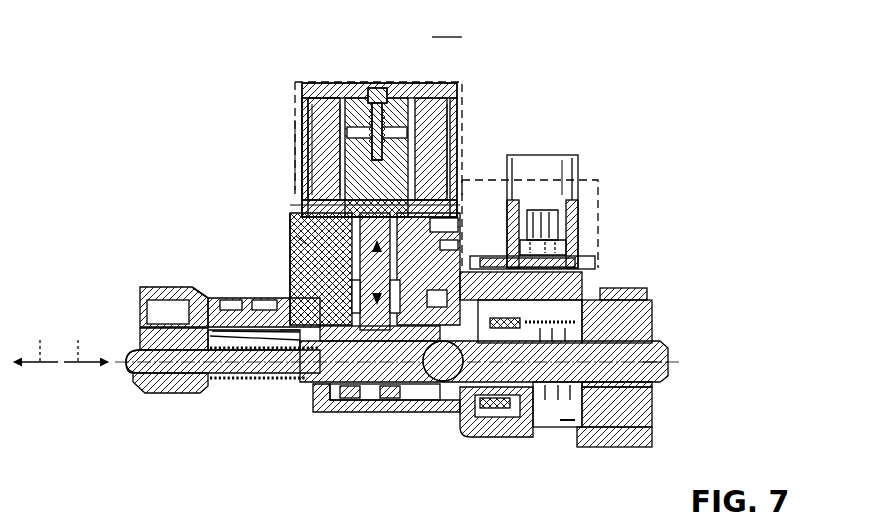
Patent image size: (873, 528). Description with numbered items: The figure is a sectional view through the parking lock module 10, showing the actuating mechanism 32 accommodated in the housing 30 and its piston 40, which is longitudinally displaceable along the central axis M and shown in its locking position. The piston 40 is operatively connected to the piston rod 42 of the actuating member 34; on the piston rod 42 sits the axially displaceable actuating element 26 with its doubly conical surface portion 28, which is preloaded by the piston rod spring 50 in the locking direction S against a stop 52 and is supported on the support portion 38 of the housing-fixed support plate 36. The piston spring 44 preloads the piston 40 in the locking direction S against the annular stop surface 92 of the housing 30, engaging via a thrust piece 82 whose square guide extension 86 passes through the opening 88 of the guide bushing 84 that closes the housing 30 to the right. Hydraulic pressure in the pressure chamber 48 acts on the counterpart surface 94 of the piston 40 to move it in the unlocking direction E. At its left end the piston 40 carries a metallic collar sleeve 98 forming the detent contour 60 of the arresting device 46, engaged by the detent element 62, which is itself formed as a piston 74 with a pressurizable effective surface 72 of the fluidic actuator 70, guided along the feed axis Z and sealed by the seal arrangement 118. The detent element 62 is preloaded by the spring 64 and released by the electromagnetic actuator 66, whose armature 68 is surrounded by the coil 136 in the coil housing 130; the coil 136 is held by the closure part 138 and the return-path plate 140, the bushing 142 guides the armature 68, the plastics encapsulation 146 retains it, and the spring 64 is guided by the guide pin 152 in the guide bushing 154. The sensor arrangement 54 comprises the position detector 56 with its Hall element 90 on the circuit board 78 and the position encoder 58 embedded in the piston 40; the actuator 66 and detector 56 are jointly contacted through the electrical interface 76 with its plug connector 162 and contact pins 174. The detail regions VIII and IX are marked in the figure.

The parking lock module 10 is at (675, 262).
The actuating element 26 is at (142, 388).
The conical surface portion 28 is at (182, 395).
The housing 30 is at (296, 278).
The actuating mechanism 32 is at (458, 414).
The actuating member 34 is at (260, 384).
The support plate 36 is at (158, 292).
The support portion 38 is at (133, 360).
The piston 40 is at (545, 430).
The piston rod 42 is at (228, 378).
The piston spring 44 is at (568, 425).
The arresting device 46 is at (449, 140).
The pressure chamber 48 is at (500, 430).
The piston rod spring 50 is at (280, 382).
The stop 52 is at (145, 330).
The sensor arrangement 54 is at (580, 262).
The position detector 56 is at (602, 290).
The position encoder 58 is at (532, 314).
The detent contour 60 is at (296, 306).
The detent element 62 is at (312, 208).
The spring 64 is at (360, 128).
The electromagnetic actuator 66 is at (432, 112).
The armature 68 is at (404, 172).
The fluidic actuator 70 is at (300, 262).
The pressurizable effective surface 72 is at (302, 374).
The piston 74 is at (456, 210).
The electrical interface 76 is at (540, 154).
The circuit board 78 is at (458, 244).
The thrust piece 82 is at (612, 440).
The guide bushing 84 is at (652, 306).
The guide extension 86 is at (654, 344).
The opening 88 is at (654, 385).
The Hall element 90 is at (566, 245).
The annular stop surface 92 is at (466, 440).
The counterpart surface 94 is at (420, 412).
The collar sleeve 98 is at (366, 412).
The seal arrangement 118 is at (296, 206).
The coil housing 130 is at (456, 82).
The coil 136 is at (312, 100).
The closure part 138 is at (303, 110).
The return-path plate 140 is at (308, 178).
The bushing 142 is at (298, 160).
The plastics encapsulation 146 is at (318, 130).
The guide pin 152 is at (365, 150).
The guide bushing 154 is at (378, 88).
The plug connector 162 is at (574, 186).
The contact pins 174 is at (588, 202).
The central axis M is at (672, 362).
The locking direction S is at (36, 338).
The unlocking direction E is at (86, 338).
The feed axis Z is at (310, 242).
The detail VIII is at (408, 81).
The detail IX is at (598, 200).